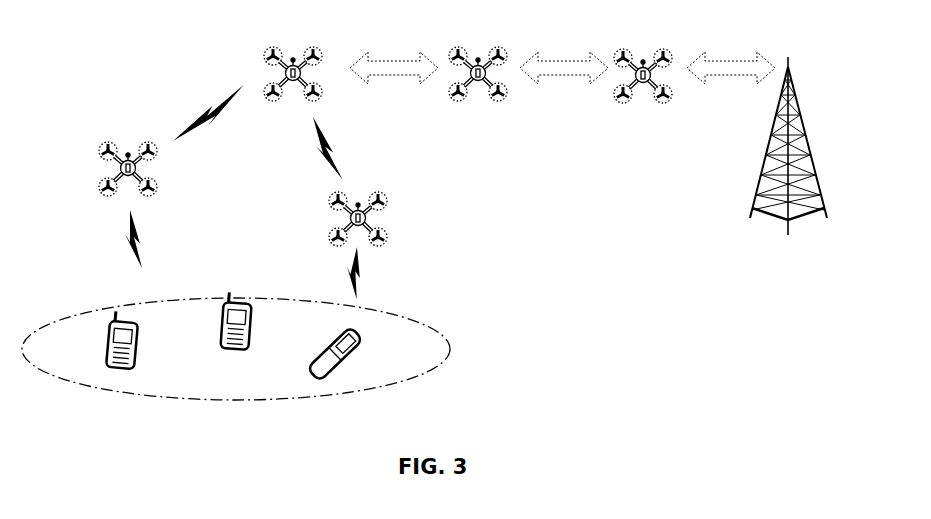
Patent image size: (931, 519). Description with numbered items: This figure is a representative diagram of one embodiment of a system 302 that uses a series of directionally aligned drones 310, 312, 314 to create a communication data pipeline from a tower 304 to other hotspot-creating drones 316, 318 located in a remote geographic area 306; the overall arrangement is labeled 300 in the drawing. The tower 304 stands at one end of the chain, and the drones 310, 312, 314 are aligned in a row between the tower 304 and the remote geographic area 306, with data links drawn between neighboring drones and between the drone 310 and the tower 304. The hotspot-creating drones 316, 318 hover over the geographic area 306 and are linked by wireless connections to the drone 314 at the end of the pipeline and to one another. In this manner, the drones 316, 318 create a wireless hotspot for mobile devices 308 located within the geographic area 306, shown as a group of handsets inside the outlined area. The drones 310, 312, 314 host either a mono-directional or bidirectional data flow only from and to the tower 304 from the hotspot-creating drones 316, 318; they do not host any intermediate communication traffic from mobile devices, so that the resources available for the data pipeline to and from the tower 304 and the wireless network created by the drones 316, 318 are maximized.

The UAV mesh network system 300 is at (112, 33).
The system 302 is at (622, 162).
The tower 304 is at (793, 219).
The remote geographic area 306 is at (410, 313).
The mobile devices 308 is at (222, 372).
The directionally aligned drone 310 is at (665, 50).
The directionally aligned drone 312 is at (500, 50).
The directionally aligned drone 314 is at (314, 50).
The hotspot-creating drone 316 is at (110, 143).
The hotspot-creating drone 318 is at (383, 195).